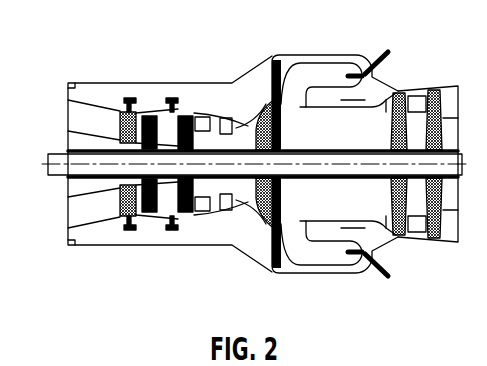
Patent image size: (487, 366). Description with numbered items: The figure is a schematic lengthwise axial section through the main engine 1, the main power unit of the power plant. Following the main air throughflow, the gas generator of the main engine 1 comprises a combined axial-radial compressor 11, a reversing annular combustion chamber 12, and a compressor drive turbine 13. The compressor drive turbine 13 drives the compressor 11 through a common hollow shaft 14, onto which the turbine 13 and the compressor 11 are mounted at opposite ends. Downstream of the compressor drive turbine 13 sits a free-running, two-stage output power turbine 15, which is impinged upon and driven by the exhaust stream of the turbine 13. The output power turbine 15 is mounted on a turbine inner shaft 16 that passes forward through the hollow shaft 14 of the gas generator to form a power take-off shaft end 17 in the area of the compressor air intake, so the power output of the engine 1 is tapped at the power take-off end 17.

The main engine 1 is at (227, 261).
The combined axial-radial compressor 11 is at (130, 110).
The reversing annular combustion chamber 12 is at (338, 64).
The compressor drive turbine 13 is at (322, 186).
The common hollow shaft 14 is at (203, 212).
The free-running, two-stage output power turbine 15 is at (397, 93).
The turbine inner shaft 16 is at (372, 236).
The power take-off shaft end 17 is at (60, 176).